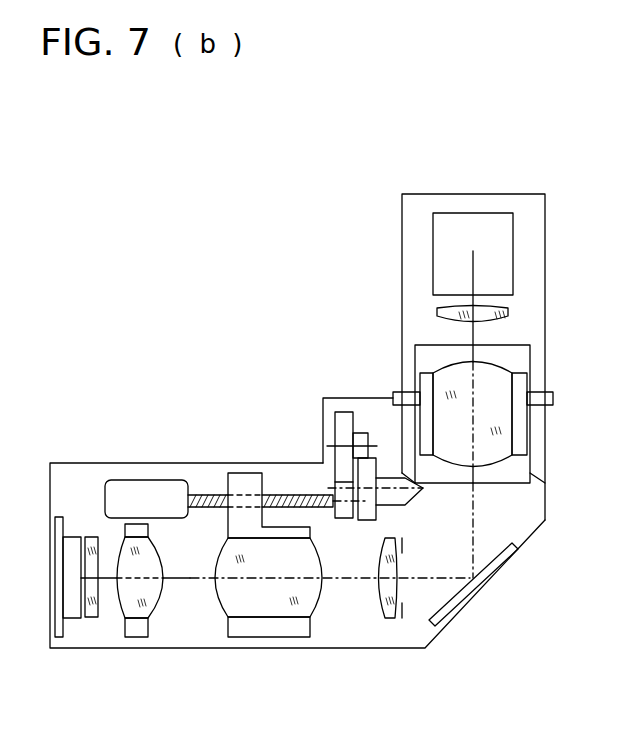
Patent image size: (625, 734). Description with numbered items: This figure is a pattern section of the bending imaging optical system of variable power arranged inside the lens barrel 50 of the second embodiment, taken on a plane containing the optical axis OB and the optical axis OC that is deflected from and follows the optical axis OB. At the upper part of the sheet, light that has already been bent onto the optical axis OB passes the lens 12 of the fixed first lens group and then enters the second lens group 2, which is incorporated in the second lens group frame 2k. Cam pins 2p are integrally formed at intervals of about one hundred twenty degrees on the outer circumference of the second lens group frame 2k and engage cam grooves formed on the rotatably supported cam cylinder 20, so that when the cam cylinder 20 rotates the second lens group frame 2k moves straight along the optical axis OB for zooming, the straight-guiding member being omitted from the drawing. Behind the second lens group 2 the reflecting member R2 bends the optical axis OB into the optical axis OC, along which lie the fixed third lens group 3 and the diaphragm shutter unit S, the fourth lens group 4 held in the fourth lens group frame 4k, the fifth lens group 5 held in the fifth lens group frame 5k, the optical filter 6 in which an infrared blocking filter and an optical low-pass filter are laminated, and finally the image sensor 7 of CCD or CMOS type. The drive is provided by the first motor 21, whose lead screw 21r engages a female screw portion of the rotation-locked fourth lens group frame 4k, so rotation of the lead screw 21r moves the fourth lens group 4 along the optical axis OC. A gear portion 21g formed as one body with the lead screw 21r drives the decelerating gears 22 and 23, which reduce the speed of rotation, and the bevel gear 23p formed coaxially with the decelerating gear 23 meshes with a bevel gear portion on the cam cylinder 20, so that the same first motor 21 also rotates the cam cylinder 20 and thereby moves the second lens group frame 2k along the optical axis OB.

The lens barrel 50 is at (360, 210).
The lens 12 is at (508, 313).
The cam cylinder 20 is at (410, 350).
The second lens group frame 2k is at (422, 390).
The second lens group 2 is at (505, 427).
The cam pins 2p is at (553, 399).
The optical axis OB is at (485, 503).
The gear portion 21g is at (342, 487).
The decelerating gear 22 is at (343, 423).
The decelerating gear 23 is at (367, 521).
The bevel gear 23p is at (415, 506).
The first motor 21 is at (145, 500).
The lead screw 21r is at (220, 497).
The image sensor 7 is at (73, 553).
The optical filter 6 is at (90, 537).
The optical axis OC is at (185, 578).
The fifth lens group 5 is at (125, 590).
The fifth lens group frame 5k is at (137, 628).
The fourth lens group 4 is at (250, 605).
The fourth lens group frame 4k is at (285, 635).
The third lens group 3 is at (388, 618).
The diaphragm shutter unit S is at (402, 618).
The reflecting member R2 is at (450, 603).